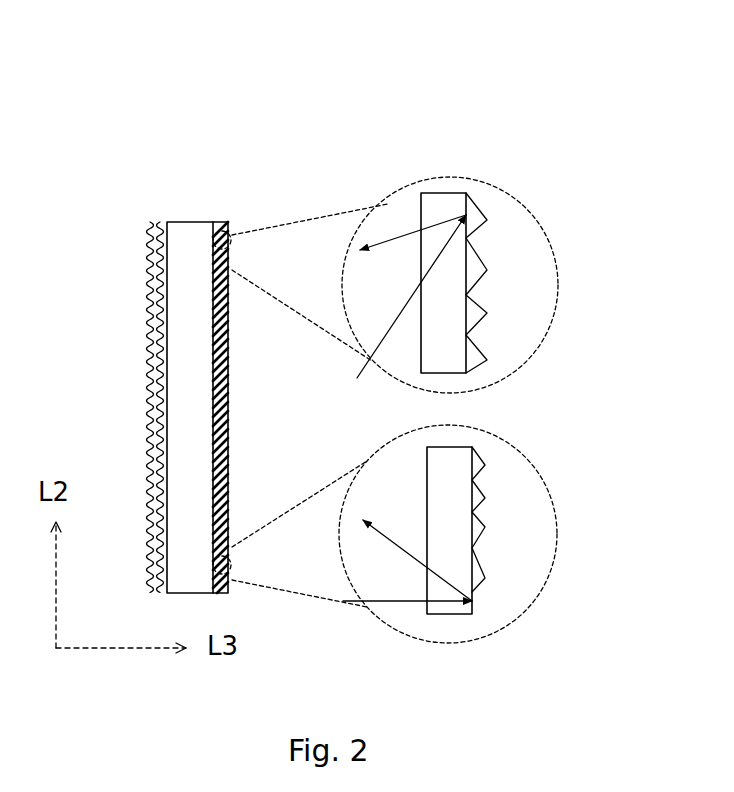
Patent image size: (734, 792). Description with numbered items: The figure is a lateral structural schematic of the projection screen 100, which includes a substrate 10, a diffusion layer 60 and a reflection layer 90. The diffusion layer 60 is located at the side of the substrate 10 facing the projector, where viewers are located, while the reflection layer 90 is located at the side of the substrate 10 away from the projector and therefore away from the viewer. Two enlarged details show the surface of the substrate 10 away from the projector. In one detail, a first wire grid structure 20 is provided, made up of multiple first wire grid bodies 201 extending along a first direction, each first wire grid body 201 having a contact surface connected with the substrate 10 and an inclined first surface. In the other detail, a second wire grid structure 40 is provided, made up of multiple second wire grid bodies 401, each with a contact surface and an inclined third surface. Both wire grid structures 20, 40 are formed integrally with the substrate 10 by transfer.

The projection screen 100 is at (378, 46).
The substrate 10 is at (195, 233).
The diffusion layer 60 is at (150, 252).
The reflection layer 90 is at (222, 240).
The second wire grid structure 40 is at (480, 275).
The second wire grid body 401 is at (487, 308).
The first wire grid structure 20 is at (480, 500).
The first wire grid body 201 is at (478, 558).